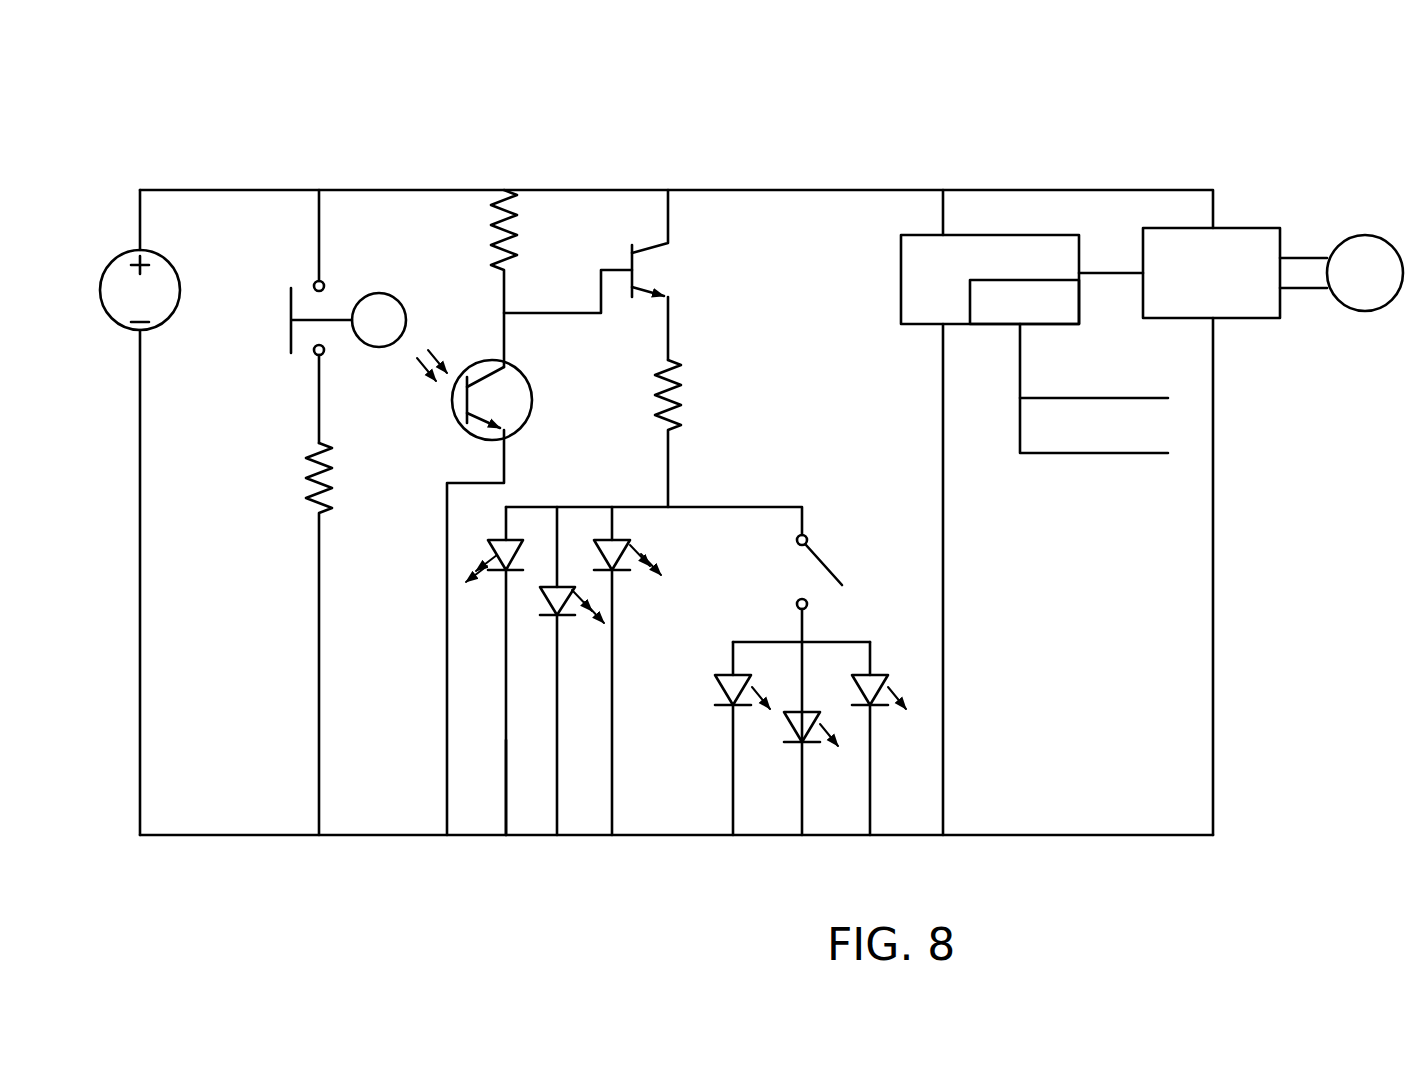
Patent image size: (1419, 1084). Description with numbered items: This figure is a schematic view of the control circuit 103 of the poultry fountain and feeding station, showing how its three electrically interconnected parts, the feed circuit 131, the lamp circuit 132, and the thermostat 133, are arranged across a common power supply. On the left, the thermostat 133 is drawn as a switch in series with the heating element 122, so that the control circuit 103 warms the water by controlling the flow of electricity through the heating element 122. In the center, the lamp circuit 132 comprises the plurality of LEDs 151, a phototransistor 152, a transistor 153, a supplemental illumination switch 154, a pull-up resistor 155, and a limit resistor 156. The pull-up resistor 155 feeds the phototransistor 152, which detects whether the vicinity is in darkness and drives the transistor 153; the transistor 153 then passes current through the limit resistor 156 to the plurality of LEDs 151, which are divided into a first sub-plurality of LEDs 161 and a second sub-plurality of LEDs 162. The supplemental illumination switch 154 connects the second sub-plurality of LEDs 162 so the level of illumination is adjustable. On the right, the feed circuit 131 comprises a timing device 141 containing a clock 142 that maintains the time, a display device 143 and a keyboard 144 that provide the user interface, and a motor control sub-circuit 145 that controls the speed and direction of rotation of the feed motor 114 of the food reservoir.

The control circuit 103 is at (232, 150).
The feed motor 114 is at (1365, 313).
The heating element 122 is at (300, 480).
The feed circuit 131 is at (1073, 844).
The lamp circuit 132 is at (668, 840).
The thermostat 133 is at (335, 303).
The timing device 141 is at (1067, 243).
The clock 142 is at (1075, 307).
The display device 143 is at (1160, 387).
The keyboard 144 is at (1173, 440).
The motor control sub-circuit 145 is at (1265, 237).
The plurality of LEDs 151 is at (494, 821).
The phototransistor 152 is at (532, 418).
The transistor 153 is at (647, 272).
The supplemental illumination switch 154 is at (827, 562).
The pull-up resistor 155 is at (515, 238).
The limit resistor 156 is at (680, 383).
The first sub-plurality of LEDs 161 is at (620, 627).
The second sub-plurality of LEDs 162 is at (883, 650).